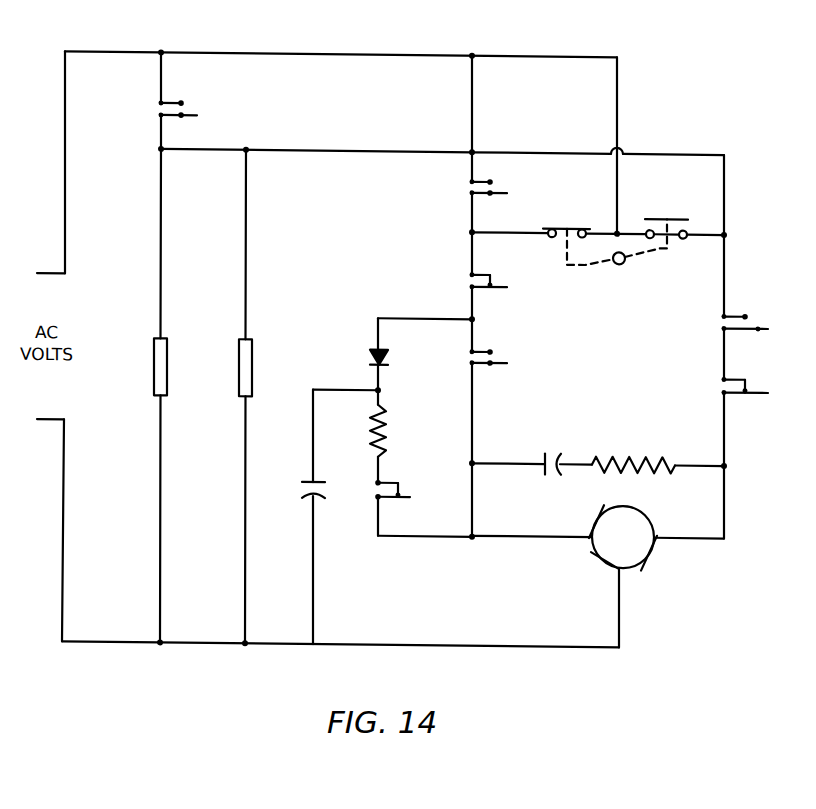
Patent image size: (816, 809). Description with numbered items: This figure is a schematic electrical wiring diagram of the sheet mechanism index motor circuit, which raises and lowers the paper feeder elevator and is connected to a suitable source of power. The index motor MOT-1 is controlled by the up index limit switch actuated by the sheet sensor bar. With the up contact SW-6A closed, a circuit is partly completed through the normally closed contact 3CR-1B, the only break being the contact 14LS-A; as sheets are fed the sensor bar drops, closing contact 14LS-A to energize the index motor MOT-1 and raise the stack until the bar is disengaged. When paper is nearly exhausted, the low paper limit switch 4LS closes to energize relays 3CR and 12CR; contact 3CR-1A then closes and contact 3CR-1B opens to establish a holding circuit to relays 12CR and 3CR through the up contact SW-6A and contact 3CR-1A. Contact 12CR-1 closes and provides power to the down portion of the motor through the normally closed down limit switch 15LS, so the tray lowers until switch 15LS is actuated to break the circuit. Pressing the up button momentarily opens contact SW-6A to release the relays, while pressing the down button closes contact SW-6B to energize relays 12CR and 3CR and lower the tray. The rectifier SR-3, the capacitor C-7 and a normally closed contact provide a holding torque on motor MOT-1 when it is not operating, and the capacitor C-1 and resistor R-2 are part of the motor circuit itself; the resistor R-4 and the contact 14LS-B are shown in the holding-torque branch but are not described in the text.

The low paper limit switch 4LS is at (198, 108).
The relay 12CR is at (186, 396).
The relay 3CR is at (267, 397).
The contact 3CR-1A is at (451, 188).
The normally closed contact 3CR-1B is at (451, 281).
The contact 14LS-A is at (521, 356).
The rectifier SR-3 is at (399, 354).
The resistor R-4 is at (396, 436).
The capacitor C-7 is at (340, 516).
The limit switch contact 14LS-B is at (412, 508).
The capacitor C-1 is at (566, 453).
The resistor R-2 is at (658, 452).
The index motor MOT-1 is at (623, 538).
The contact 12CR-1 is at (711, 322).
The down limit switch 15LS is at (718, 387).
The up contact SW-6A is at (582, 248).
The down contact SW-6B is at (663, 237).